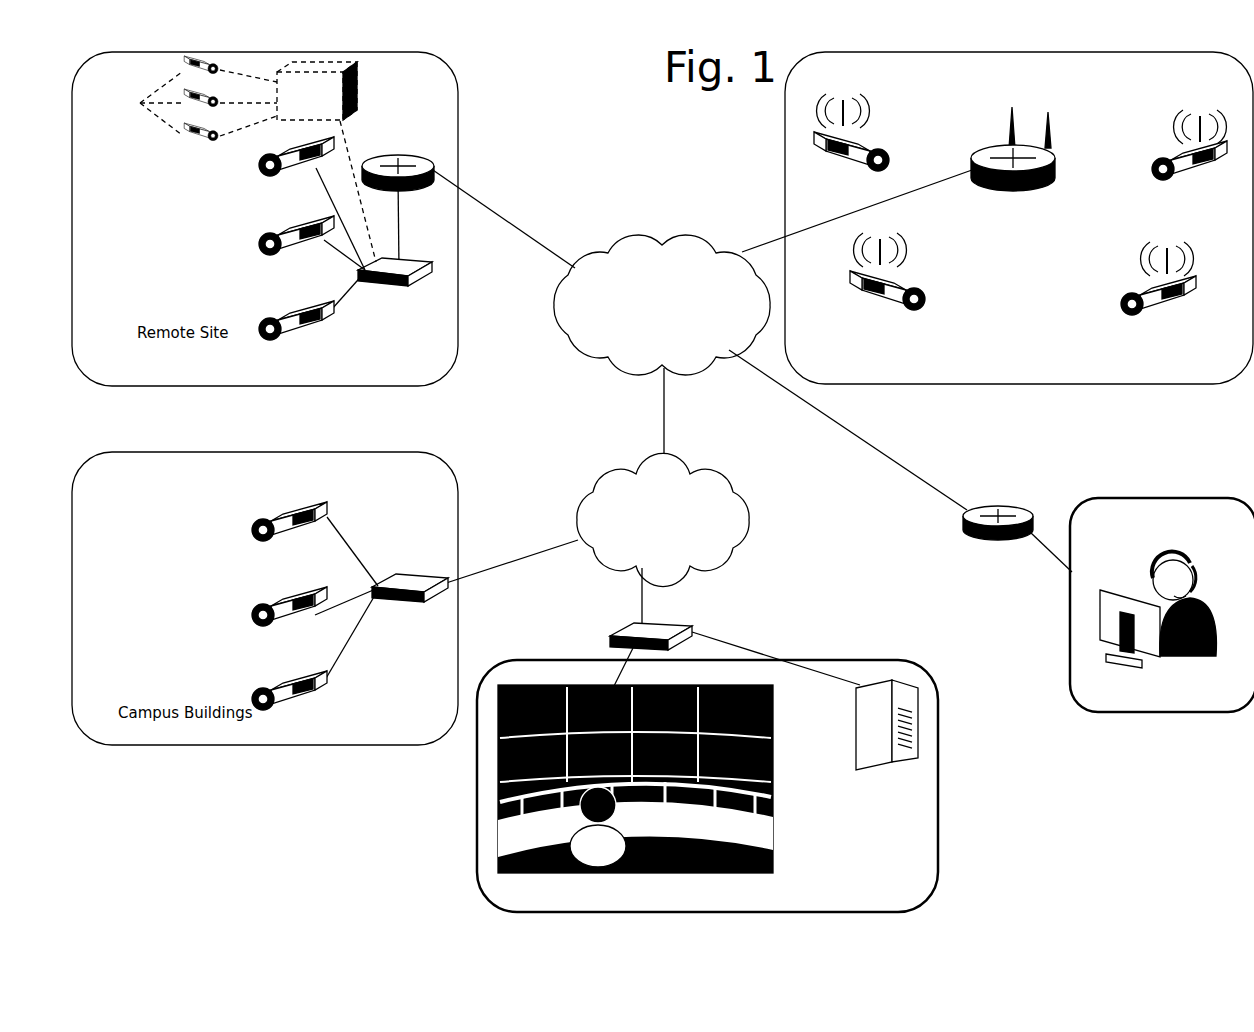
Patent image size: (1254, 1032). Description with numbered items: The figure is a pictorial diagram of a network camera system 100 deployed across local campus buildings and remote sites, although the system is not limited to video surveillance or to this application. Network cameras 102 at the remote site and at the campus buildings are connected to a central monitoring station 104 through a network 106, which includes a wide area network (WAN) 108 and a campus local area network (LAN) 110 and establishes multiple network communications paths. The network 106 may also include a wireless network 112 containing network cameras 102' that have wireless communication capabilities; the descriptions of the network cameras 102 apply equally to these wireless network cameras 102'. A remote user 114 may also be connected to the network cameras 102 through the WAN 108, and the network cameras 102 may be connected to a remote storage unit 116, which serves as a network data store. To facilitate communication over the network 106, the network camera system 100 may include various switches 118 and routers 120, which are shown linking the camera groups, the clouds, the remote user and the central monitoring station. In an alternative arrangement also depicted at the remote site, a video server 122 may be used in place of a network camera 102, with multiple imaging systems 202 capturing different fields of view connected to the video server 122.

The network camera system 100 is at (520, 124).
The network cameras 102 is at (292, 423).
The network cameras with wireless communication capabilities 102' is at (1027, 204).
The central monitoring station 104 is at (776, 831).
The network 106 is at (620, 210).
The wide area network (WAN) 108 is at (665, 268).
The campus local area network (LAN) 110 is at (640, 480).
The wireless network 112 is at (785, 122).
The remote user 114 is at (1160, 498).
The remote storage unit 116 is at (858, 714).
The switches 118 is at (381, 278).
The routers 120 is at (395, 160).
The video server 122 is at (358, 88).
The imaging systems 202 is at (157, 98).